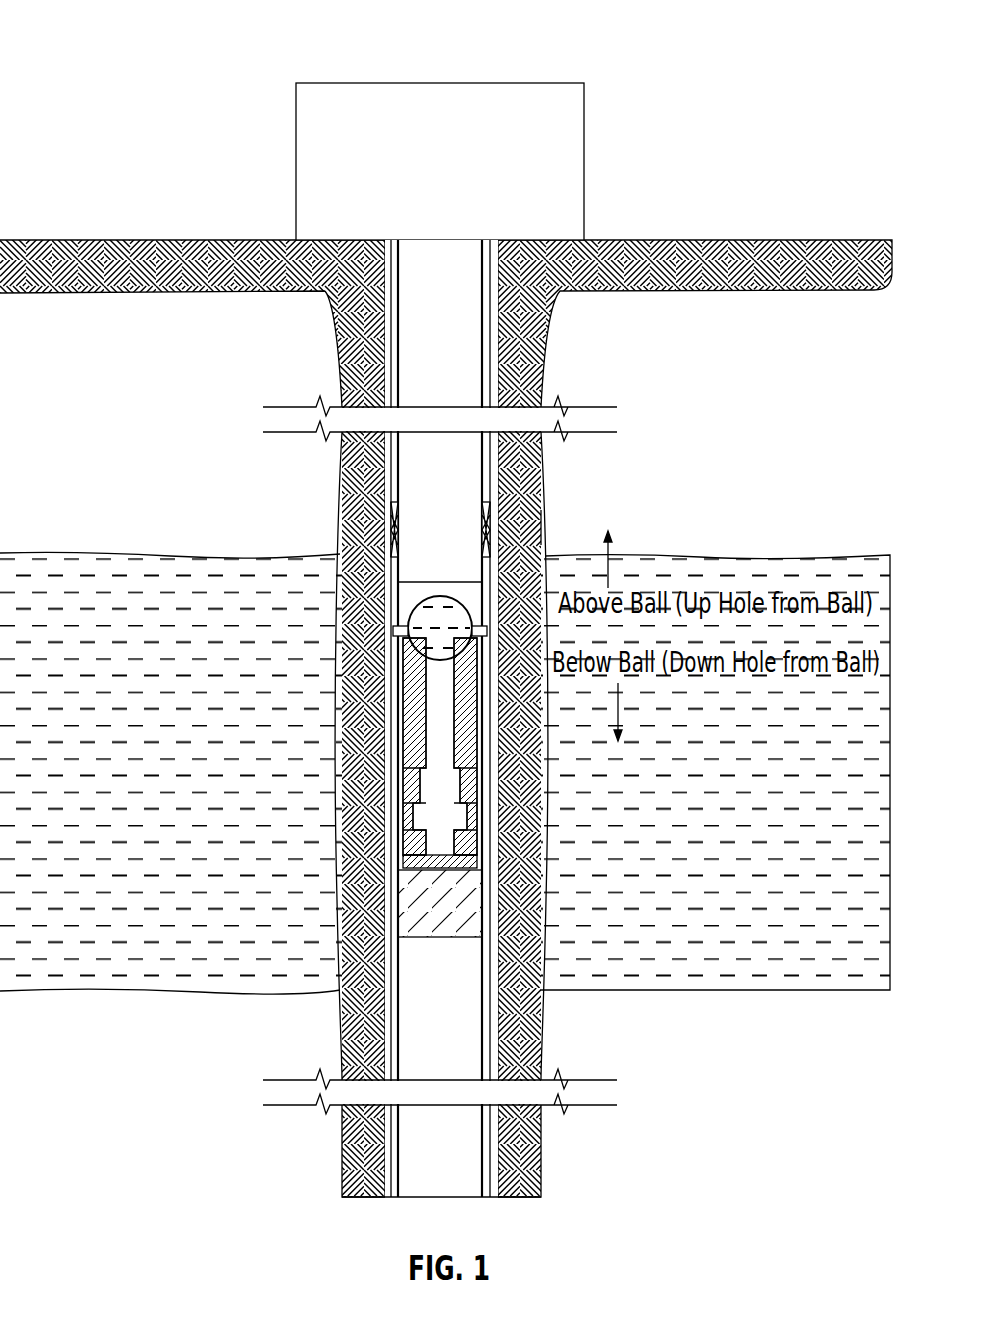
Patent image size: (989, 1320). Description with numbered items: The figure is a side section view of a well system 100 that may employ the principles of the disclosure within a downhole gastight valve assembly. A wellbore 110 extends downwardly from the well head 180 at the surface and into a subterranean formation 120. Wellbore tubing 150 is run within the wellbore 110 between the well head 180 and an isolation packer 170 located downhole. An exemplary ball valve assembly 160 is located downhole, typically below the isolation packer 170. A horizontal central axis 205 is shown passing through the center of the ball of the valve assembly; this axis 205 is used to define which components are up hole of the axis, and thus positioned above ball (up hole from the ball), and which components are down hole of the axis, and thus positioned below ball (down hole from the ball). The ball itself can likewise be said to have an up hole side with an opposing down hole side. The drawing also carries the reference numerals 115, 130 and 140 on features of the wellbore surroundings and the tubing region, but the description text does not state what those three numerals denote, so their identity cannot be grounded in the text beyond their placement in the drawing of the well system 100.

The well system 100 is at (127, 48).
The wellbore 110 is at (388, 318).
The surface 115 is at (785, 239).
The subterranean formation 120 is at (788, 768).
The cement 130 is at (546, 326).
The seal 140 is at (483, 445).
The wellbore tubing 150 is at (398, 465).
The ball valve assembly 160 is at (391, 637).
The isolation packer 170 is at (542, 528).
The well head 180 is at (463, 175).
The horizontal central axis 205 is at (268, 625).